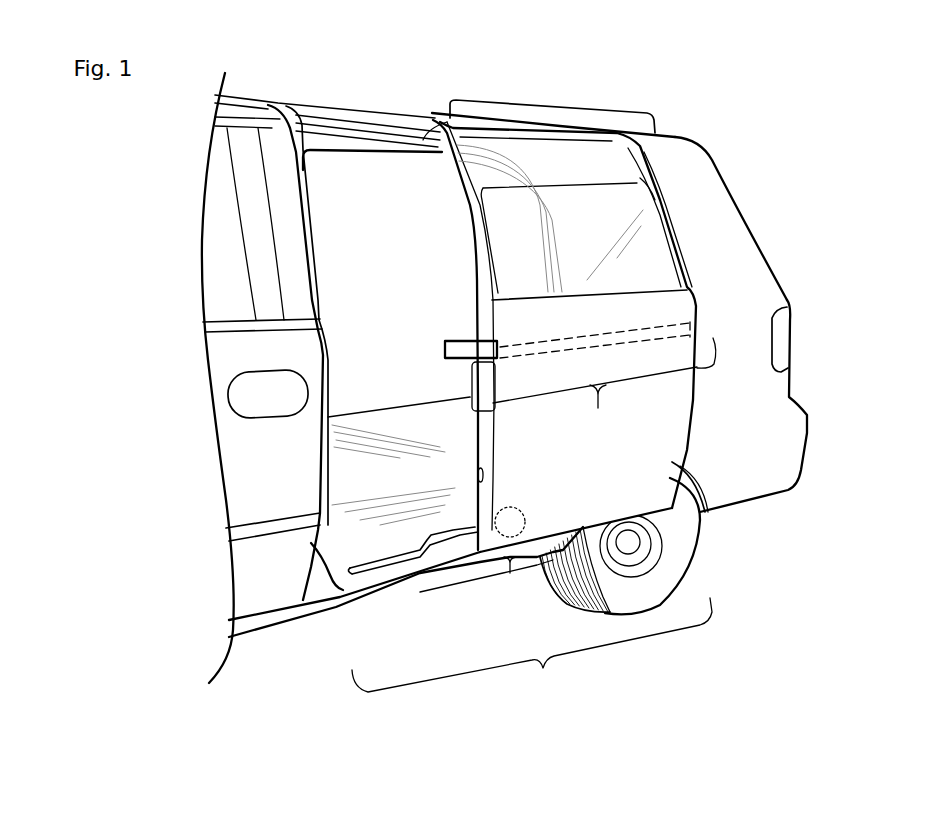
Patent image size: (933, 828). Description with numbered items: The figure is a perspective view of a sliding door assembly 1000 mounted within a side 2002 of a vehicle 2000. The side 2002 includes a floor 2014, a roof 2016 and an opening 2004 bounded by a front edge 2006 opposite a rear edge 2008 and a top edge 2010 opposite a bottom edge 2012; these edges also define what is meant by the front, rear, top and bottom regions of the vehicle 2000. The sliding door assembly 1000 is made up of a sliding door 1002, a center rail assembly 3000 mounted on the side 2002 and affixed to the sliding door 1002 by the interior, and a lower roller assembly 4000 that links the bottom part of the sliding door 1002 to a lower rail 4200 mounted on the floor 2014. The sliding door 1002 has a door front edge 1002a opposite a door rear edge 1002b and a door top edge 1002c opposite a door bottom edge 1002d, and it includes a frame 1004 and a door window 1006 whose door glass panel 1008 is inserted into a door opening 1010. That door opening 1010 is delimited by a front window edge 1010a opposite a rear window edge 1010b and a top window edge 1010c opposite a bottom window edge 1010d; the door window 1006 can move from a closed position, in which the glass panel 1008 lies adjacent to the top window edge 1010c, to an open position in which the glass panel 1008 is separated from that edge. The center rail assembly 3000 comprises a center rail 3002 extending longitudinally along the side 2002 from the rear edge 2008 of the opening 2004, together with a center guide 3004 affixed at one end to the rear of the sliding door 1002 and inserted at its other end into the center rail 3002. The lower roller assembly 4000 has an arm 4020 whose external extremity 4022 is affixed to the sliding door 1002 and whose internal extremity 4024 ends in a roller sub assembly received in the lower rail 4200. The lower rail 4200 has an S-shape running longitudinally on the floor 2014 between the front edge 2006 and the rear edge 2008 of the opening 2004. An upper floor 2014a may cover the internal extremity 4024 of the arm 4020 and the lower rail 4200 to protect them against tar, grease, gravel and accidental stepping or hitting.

The sliding door assembly 1000 is at (532, 650).
The sliding door 1002 is at (700, 252).
The door front edge 1002a is at (457, 187).
The door rear edge 1002b is at (685, 243).
The door top edge 1002c is at (600, 127).
The door bottom edge 1002d is at (617, 530).
The frame 1004 is at (695, 403).
The door window 1006 is at (560, 91).
The door glass panel 1008 is at (640, 176).
The door opening 1010 is at (626, 160).
The front window edge 1010a is at (460, 162).
The rear window edge 1010b is at (665, 218).
The top window edge 1010c is at (613, 142).
The bottom window edge 1010d is at (588, 294).
The vehicle 2000 is at (168, 210).
The side 2002 is at (790, 296).
The opening 2004 is at (350, 383).
The front edge 2006 is at (310, 232).
The rear edge 2008 is at (540, 247).
The top edge 2010 is at (330, 150).
The bottom edge 2012 is at (318, 580).
The floor 2014 is at (388, 407).
The upper floor 2014a is at (457, 563).
The roof 2016 is at (262, 95).
The center rail assembly 3000 is at (595, 397).
The center rail 3002 is at (660, 327).
The center guide 3004 is at (493, 345).
The lower roller assembly 4000 is at (486, 579).
The arm 4020 is at (480, 527).
The external extremity 4022 is at (525, 508).
The internal extremity 4024 is at (463, 528).
The lower rail 4200 is at (350, 565).